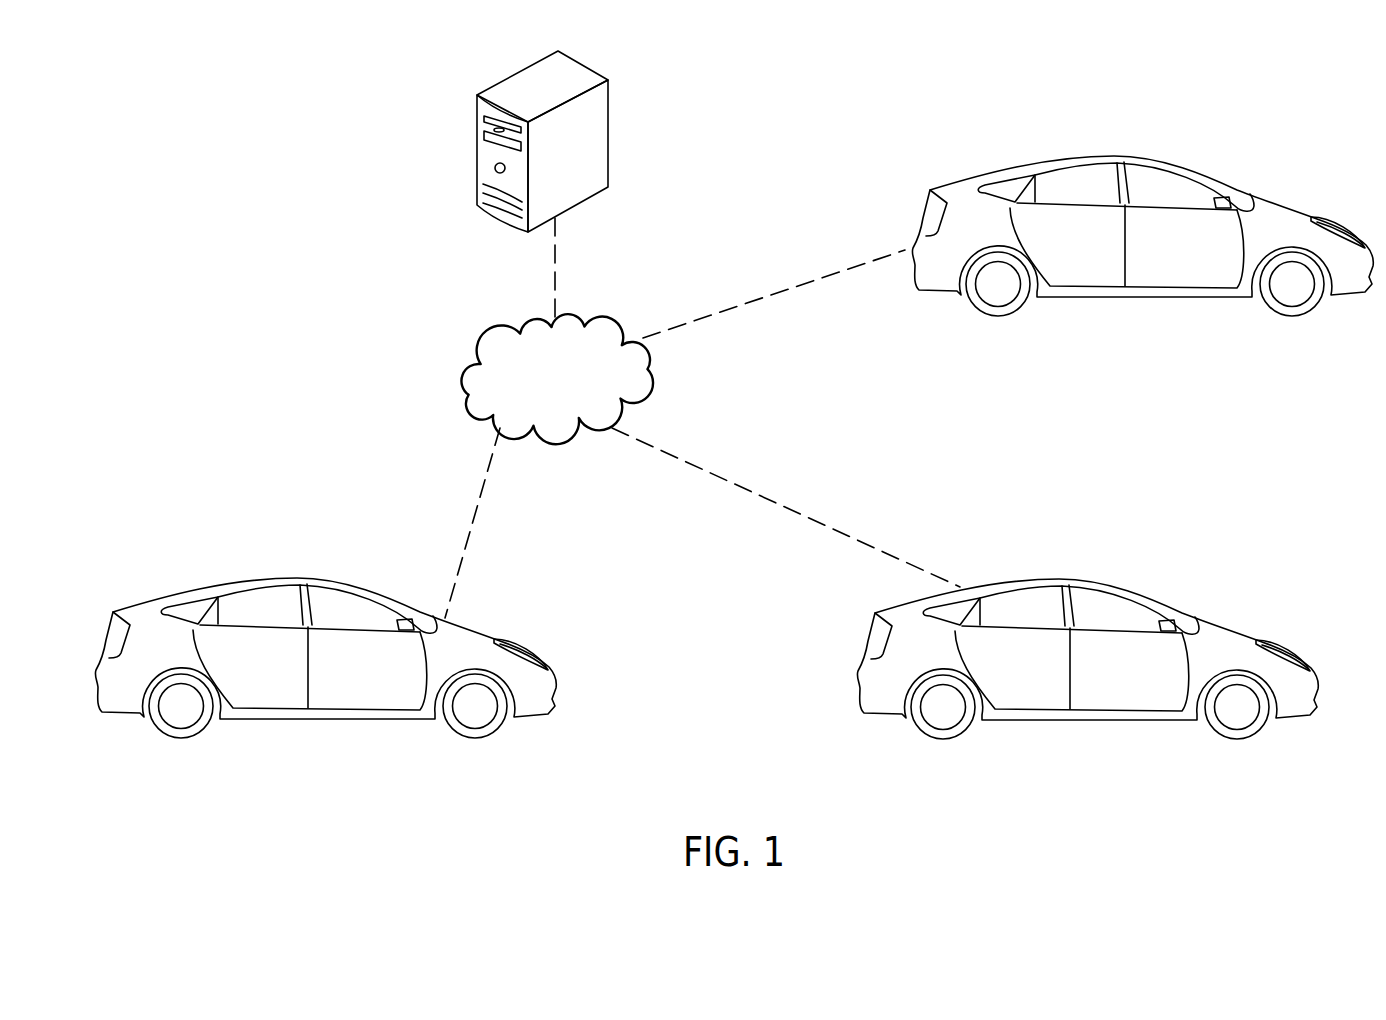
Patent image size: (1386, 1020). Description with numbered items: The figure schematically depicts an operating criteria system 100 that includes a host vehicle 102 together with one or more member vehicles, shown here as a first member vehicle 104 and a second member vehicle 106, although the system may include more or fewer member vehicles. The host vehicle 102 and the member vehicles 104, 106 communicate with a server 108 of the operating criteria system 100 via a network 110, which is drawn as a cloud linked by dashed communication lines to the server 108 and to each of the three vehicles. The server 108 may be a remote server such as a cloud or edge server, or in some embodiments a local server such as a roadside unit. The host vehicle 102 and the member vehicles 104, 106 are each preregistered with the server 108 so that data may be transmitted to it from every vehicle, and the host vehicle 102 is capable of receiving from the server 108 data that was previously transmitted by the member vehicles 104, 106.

The operating criteria system 100 is at (220, 255).
The host vehicle 102 is at (1127, 153).
The first member vehicle 104 is at (1075, 578).
The second member vehicle 106 is at (311, 578).
The server 108 is at (609, 100).
The network 110 is at (647, 376).